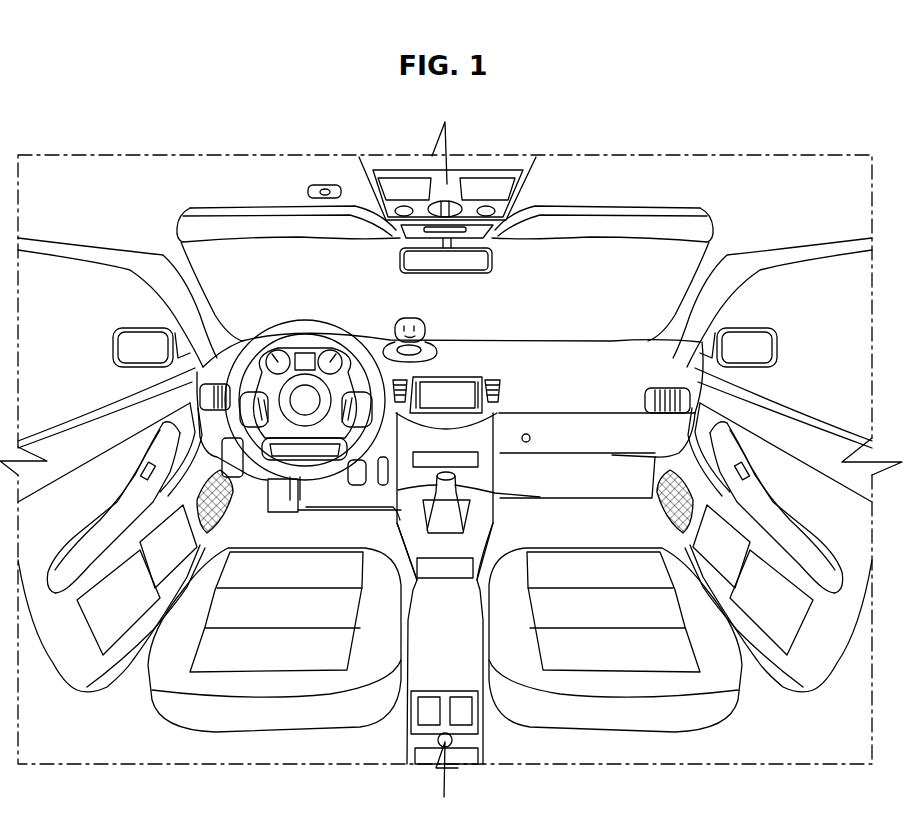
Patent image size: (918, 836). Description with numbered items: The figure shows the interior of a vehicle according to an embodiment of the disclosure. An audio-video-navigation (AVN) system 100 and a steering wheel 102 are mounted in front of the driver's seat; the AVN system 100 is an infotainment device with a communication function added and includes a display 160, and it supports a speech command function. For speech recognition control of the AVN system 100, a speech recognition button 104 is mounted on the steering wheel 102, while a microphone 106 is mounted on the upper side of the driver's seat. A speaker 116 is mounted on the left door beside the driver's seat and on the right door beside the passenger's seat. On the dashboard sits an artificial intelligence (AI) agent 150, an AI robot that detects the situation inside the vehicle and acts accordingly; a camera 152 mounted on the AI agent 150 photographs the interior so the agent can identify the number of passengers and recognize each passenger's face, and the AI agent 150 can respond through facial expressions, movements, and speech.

The audio-video-navigation (AVN) system 100 is at (449, 376).
The steering wheel 102 is at (306, 327).
The speech recognition button 104 is at (258, 352).
The microphone 106 is at (322, 198).
The speaker 116 is at (233, 508).
The artificial intelligence (AI) agent 150 is at (393, 334).
The camera 152 is at (406, 323).
The display 160 is at (462, 378).